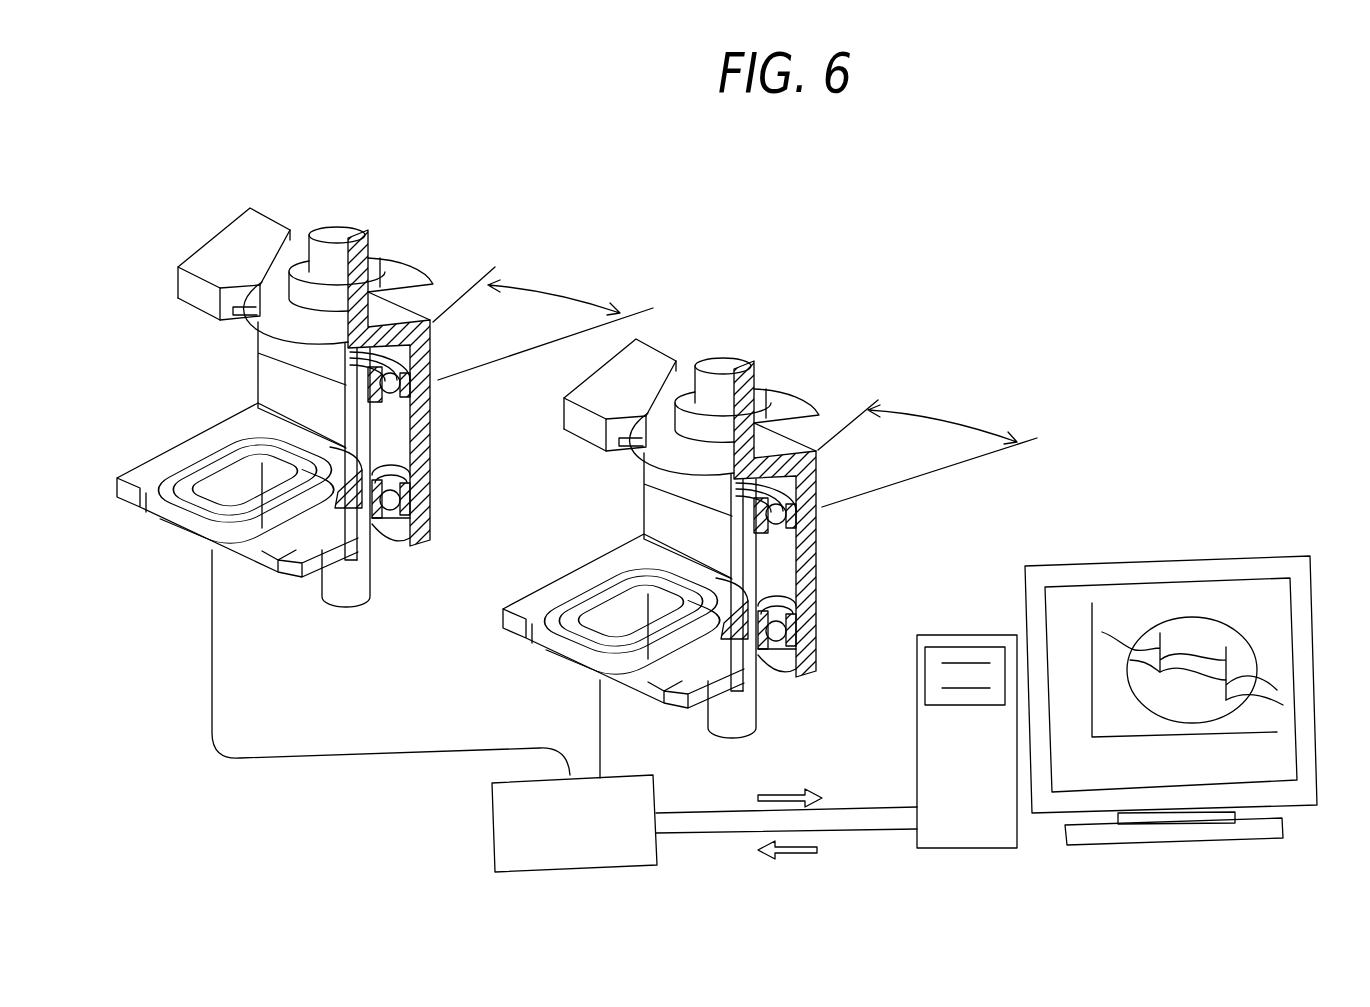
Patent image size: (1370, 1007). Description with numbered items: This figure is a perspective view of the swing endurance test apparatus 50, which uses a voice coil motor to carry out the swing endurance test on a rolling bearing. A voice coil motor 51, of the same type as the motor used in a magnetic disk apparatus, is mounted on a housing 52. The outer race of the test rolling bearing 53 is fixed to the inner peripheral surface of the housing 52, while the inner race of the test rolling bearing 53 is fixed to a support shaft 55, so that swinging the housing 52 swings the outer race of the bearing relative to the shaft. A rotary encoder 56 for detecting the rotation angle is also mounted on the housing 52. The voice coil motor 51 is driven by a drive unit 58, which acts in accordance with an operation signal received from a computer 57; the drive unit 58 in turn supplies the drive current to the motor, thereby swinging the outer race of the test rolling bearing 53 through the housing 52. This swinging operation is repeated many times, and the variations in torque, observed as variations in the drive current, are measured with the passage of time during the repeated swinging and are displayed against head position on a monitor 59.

The swing endurance test apparatus 50 is at (1052, 291).
The voice coil motor 51 is at (590, 597).
The housing 52 is at (660, 510).
The test rolling bearing 53 is at (814, 616).
The support shaft 55 is at (740, 713).
The rotary encoder 56 is at (650, 370).
The computer 57 is at (978, 837).
The drive unit 58 is at (625, 857).
The monitor 59 is at (1312, 543).